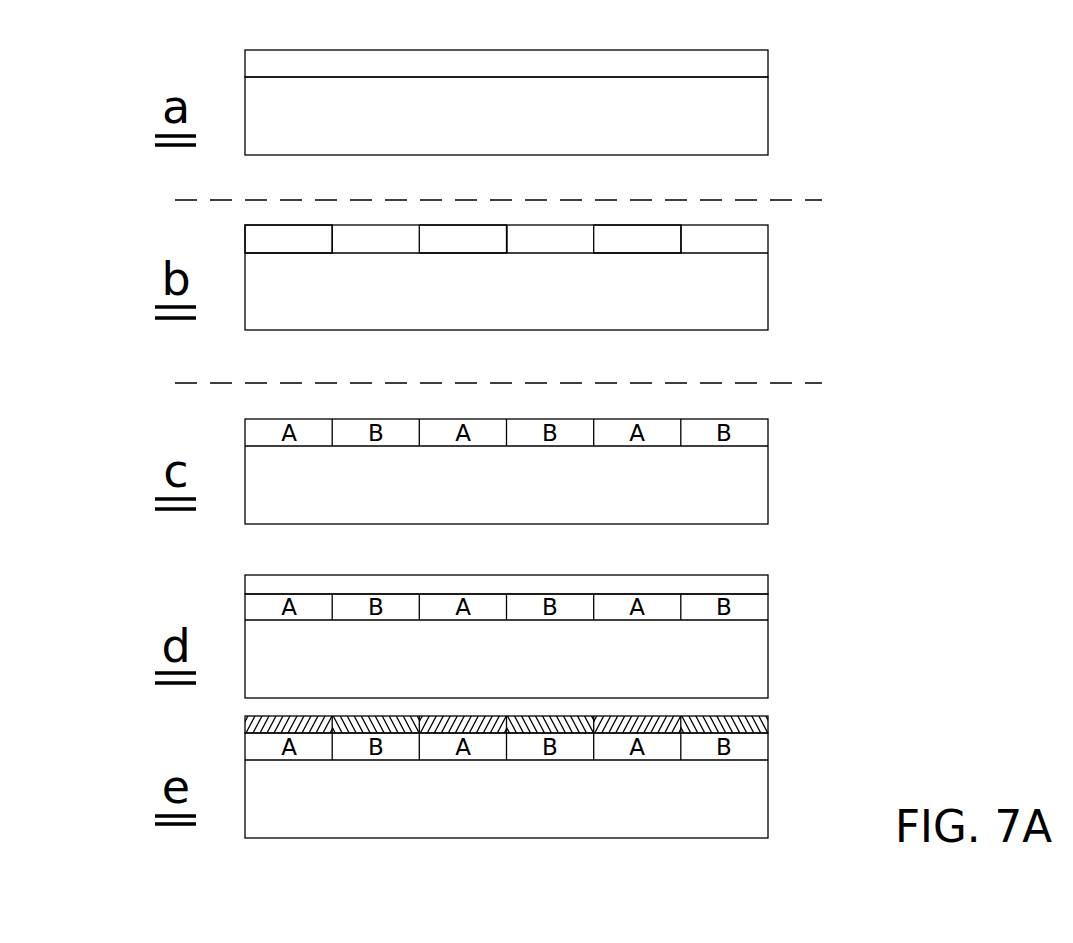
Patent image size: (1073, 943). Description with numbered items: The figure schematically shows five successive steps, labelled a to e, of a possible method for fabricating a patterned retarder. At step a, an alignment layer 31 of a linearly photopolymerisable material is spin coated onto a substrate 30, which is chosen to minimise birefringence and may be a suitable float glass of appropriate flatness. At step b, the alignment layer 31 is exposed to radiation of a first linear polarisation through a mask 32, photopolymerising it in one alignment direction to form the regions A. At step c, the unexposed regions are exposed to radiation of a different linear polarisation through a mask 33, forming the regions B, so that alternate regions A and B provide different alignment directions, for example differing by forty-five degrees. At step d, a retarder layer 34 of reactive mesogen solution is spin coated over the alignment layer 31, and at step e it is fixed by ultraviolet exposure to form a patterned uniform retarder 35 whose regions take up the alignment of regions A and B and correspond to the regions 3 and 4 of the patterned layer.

The substrate 30 is at (265, 118).
The alignment layer 31 is at (262, 63).
The mask 32 is at (182, 199).
The mask 33 is at (193, 382).
The retarder layer 34 is at (258, 585).
The patterned uniform retarder 35 is at (472, 721).
The region of the patterned layer 3 is at (640, 722).
The region of the patterned layer 4 is at (756, 723).